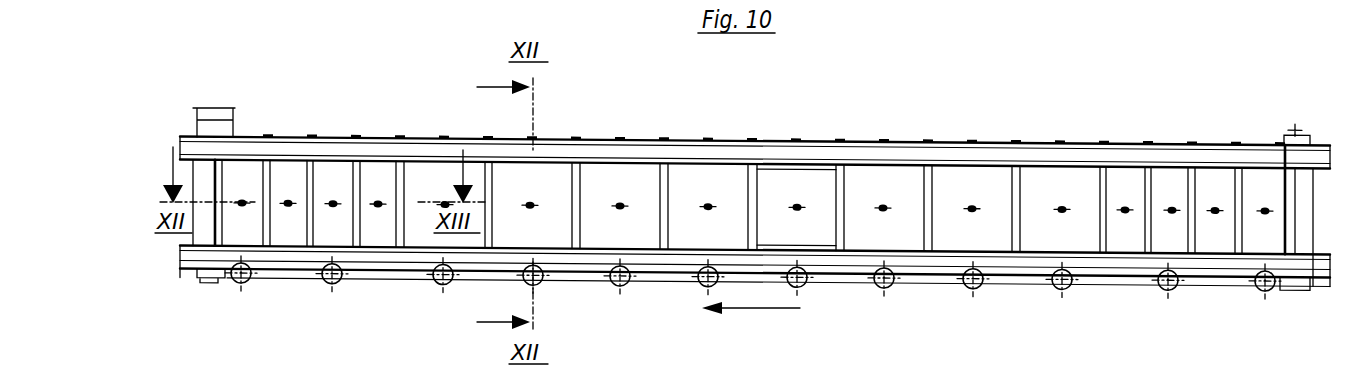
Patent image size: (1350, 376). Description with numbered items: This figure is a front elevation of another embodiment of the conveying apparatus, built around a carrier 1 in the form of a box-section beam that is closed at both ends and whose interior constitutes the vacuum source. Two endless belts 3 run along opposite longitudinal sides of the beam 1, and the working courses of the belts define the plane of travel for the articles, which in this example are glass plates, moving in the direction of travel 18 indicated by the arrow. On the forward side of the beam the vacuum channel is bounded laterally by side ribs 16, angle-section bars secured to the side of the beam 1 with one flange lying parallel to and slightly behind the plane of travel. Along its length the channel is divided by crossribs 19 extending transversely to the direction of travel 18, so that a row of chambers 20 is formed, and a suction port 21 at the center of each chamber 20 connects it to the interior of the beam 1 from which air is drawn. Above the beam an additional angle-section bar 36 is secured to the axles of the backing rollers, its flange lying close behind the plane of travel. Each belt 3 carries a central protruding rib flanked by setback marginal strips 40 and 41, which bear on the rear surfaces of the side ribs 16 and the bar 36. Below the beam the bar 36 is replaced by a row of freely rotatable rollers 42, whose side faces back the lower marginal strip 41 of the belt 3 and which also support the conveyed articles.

The carrier 1 is at (1288, 205).
The endless belt 3 is at (358, 155).
The side rib 16 is at (424, 160).
The direction of travel 18 is at (753, 324).
The crossrib 19 is at (665, 190).
The chamber 20 is at (860, 190).
The suction port 21 is at (972, 207).
The angle-section bar 36 is at (575, 140).
The marginal strip 40 is at (186, 250).
The marginal strip 41 is at (207, 247).
The rollers 42 is at (1052, 285).